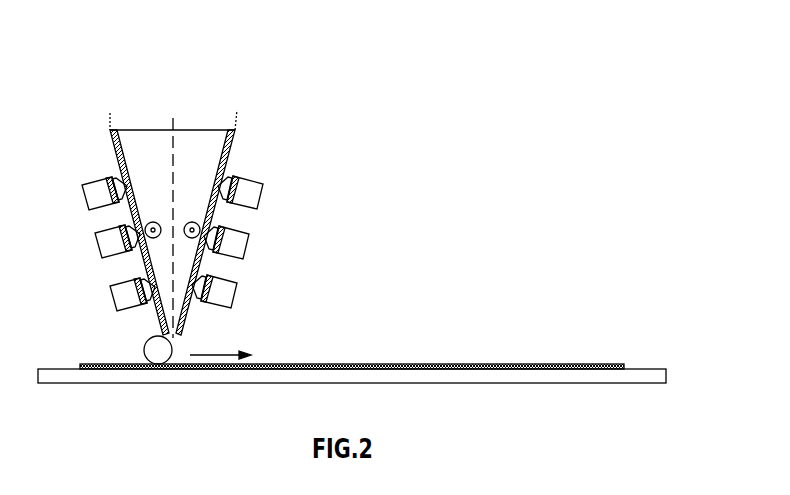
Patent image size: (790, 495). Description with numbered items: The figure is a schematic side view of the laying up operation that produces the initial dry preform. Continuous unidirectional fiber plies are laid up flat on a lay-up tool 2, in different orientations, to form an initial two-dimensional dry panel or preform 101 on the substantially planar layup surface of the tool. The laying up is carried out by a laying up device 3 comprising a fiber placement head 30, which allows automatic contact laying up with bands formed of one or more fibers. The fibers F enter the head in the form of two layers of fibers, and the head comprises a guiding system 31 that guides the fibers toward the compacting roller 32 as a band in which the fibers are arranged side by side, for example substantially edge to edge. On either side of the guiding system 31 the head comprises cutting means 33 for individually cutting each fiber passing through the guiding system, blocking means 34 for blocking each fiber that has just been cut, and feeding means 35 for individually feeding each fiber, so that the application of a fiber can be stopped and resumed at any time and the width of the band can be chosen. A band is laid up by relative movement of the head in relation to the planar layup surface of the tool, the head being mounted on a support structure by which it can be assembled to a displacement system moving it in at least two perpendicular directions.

The lay-up tool 2 is at (656, 369).
The laying up device 3 is at (102, 158).
The fiber placement head 30 is at (203, 130).
The guiding system 31 is at (147, 139).
The compacting roller 32 is at (146, 348).
The cutting means 33 is at (234, 295).
The blocking means 34 is at (260, 196).
The feeding means 35 is at (246, 246).
The initial dry preform 101 is at (463, 356).
The fibers F is at (110, 113).